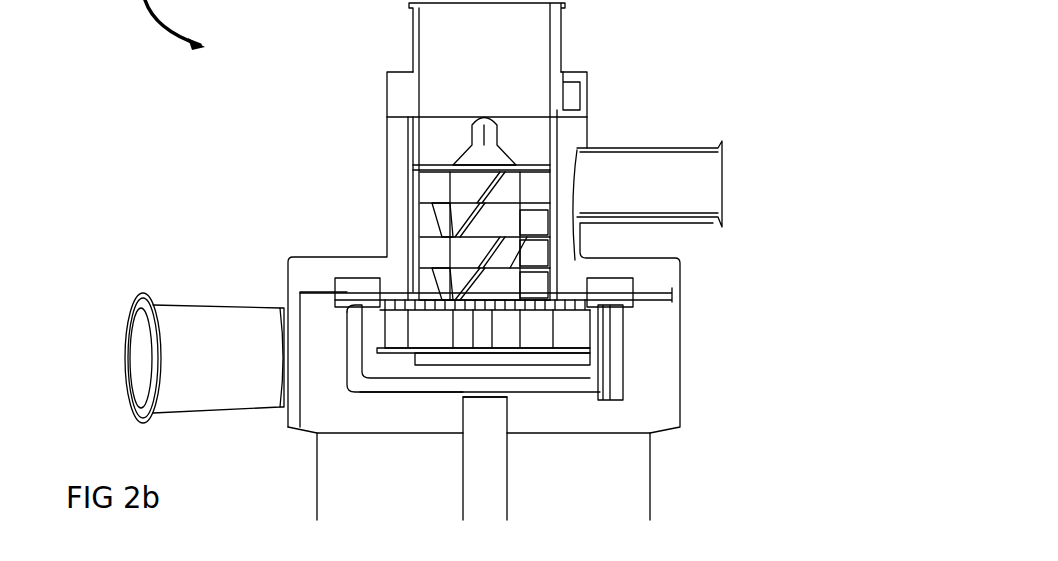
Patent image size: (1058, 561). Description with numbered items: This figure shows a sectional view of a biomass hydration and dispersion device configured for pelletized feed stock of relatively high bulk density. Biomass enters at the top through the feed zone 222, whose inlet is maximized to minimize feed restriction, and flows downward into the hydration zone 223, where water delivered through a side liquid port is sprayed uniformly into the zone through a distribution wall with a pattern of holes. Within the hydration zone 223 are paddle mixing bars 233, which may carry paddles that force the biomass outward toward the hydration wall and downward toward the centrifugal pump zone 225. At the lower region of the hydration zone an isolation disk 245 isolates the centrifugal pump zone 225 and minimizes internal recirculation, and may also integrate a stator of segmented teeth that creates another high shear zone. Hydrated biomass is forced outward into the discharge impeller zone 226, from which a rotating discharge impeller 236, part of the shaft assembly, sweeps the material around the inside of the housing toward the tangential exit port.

The feed zone 222 is at (527, 46).
The hydration zone 223 is at (368, 184).
The paddle mixing bars 233 is at (497, 182).
The isolation disk 245 is at (357, 293).
The discharge impeller 236 is at (357, 369).
The centrifugal pump zone 225 is at (530, 333).
The discharge impeller zone 226 is at (620, 373).